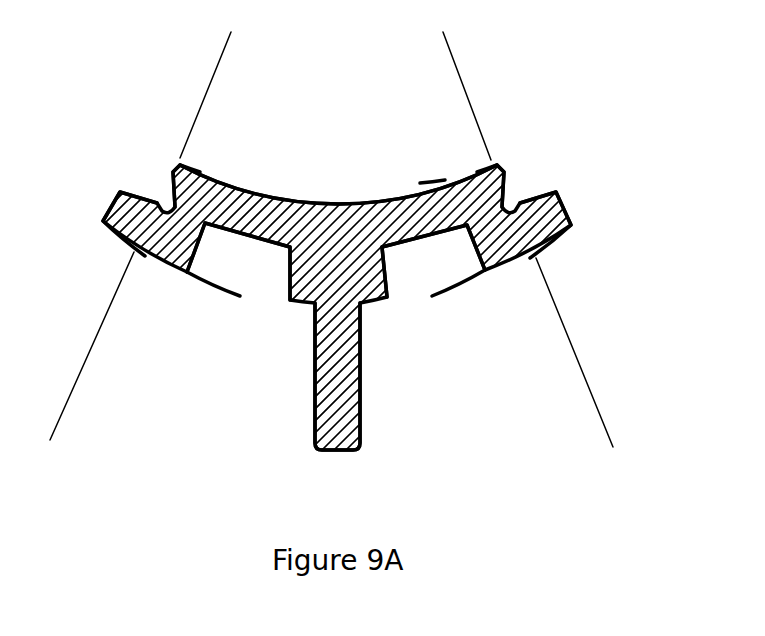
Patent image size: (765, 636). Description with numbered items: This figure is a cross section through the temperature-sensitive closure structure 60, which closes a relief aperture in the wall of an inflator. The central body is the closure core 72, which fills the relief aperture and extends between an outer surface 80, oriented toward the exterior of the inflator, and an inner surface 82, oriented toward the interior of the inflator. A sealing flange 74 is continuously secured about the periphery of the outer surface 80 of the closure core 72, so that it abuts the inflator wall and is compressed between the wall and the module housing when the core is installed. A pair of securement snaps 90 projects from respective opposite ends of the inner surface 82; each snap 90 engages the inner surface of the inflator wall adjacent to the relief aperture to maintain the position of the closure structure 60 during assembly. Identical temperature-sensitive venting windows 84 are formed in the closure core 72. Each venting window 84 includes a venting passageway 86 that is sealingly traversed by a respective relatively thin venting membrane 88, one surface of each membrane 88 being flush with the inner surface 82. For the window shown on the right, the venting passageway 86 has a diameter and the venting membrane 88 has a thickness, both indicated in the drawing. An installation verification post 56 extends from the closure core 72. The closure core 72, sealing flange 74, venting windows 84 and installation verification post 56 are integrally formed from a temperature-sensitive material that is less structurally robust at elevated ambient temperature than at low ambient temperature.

The closure structure 60 is at (162, 88).
The outer surface of closure core 80 is at (412, 218).
The securement snaps 90 is at (170, 171).
The sealing flange 74 is at (104, 204).
The inner surface of closure core 82 is at (205, 174).
The venting membrane 88 is at (432, 186).
The installation verification post 56 is at (313, 396).
The venting passageway 86 is at (243, 263).
The venting window 84 is at (227, 298).
The closure core 72 is at (447, 55).